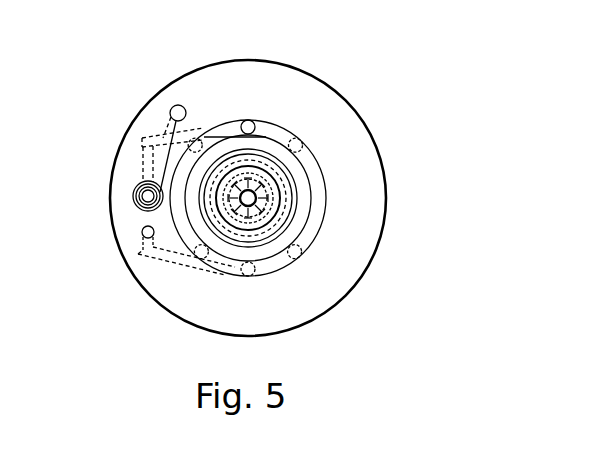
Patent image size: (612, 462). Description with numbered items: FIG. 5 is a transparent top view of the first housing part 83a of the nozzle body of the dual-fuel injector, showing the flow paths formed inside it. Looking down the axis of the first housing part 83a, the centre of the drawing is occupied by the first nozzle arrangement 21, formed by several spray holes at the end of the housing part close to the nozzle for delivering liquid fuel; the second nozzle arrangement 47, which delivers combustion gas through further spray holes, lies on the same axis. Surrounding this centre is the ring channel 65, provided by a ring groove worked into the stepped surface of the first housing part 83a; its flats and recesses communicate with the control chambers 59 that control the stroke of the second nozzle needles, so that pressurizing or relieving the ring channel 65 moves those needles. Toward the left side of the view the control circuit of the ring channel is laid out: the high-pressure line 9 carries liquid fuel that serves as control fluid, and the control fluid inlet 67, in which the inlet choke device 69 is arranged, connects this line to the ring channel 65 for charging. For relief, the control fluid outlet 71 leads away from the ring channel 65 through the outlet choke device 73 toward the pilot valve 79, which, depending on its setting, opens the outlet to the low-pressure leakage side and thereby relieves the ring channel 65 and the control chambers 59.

The first housing part 83a is at (327, 104).
The first nozzle arrangement 21 is at (258, 193).
The second nozzle arrangement 47 is at (248, 198).
The control chamber 59 is at (264, 139).
The ring channel 65 is at (258, 124).
The control fluid outlet 71 is at (177, 105).
The outlet choke device 73 is at (147, 140).
The pilot valve 79 is at (131, 210).
The high-pressure line 9 is at (144, 237).
The control fluid inlet 67 is at (162, 263).
The inlet choke device 69 is at (186, 261).